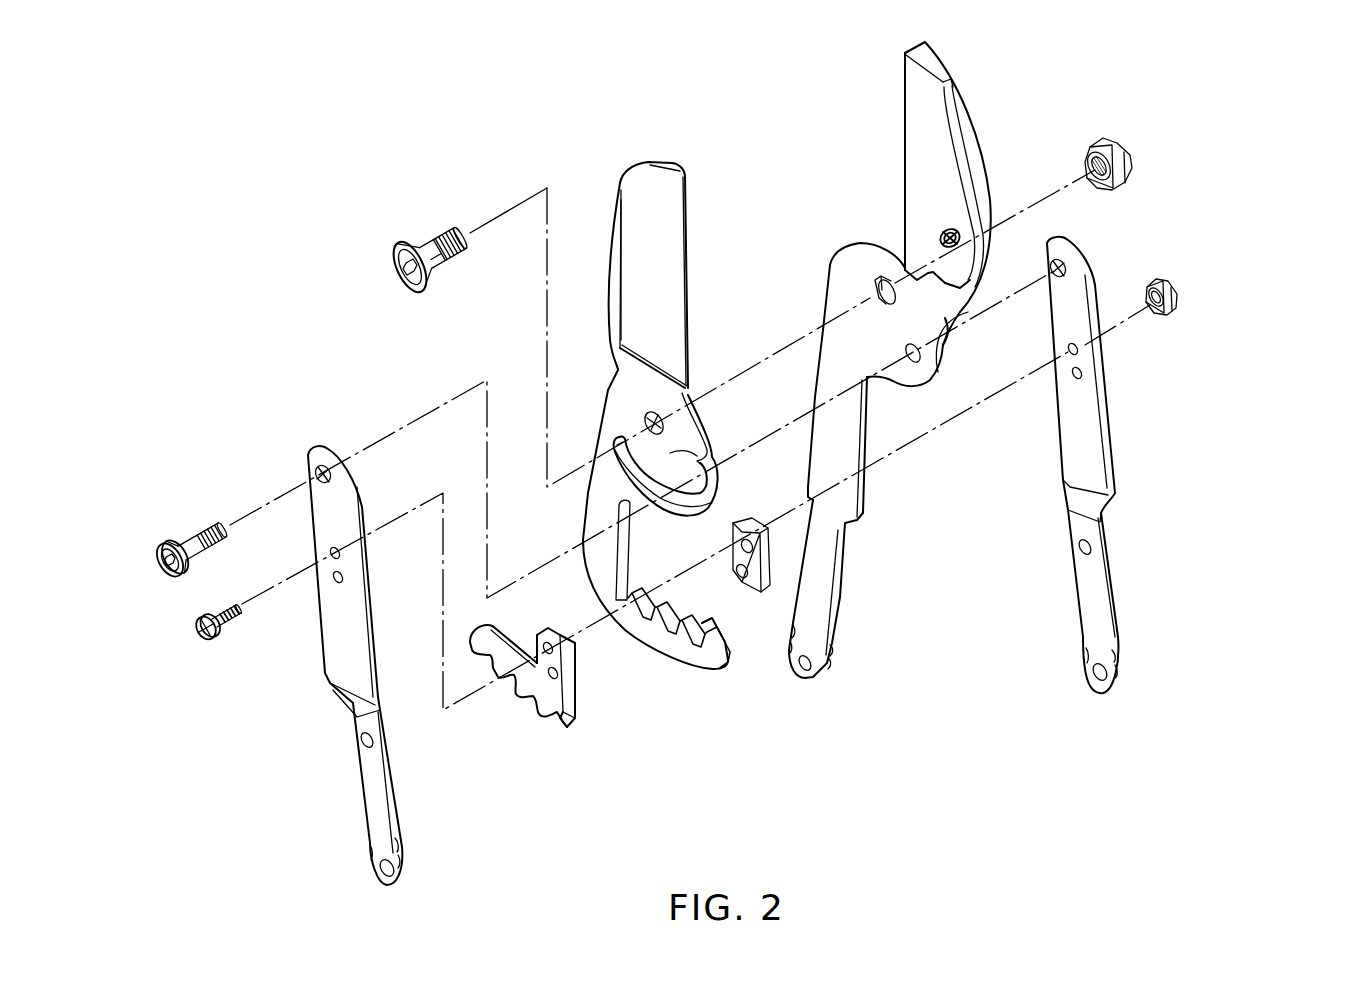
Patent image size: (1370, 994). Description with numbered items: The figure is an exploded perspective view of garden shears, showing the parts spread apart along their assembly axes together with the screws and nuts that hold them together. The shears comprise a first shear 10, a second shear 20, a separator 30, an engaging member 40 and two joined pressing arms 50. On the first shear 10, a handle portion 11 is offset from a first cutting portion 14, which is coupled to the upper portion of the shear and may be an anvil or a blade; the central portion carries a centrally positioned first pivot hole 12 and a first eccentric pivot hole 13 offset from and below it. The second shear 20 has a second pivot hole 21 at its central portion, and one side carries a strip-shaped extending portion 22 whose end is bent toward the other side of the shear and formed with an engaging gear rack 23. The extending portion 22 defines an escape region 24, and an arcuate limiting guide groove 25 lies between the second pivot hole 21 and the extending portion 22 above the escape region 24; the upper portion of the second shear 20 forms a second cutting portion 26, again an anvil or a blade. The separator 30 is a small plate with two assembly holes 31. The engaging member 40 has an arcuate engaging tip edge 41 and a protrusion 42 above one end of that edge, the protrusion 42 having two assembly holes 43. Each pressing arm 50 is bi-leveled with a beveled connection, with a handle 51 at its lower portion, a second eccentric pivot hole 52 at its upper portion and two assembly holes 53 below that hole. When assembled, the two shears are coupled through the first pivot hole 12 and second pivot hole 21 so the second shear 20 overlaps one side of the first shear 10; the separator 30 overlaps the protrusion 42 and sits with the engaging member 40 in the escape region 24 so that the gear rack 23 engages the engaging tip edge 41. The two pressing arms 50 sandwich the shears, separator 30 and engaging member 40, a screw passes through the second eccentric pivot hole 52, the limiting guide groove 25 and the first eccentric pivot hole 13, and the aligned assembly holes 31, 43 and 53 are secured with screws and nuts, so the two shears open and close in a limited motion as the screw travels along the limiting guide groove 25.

The first shear 10 is at (874, 488).
The handle portion 11 is at (840, 585).
The first pivot hole 12 is at (882, 280).
The first eccentric pivot hole 13 is at (950, 322).
The first cutting portion 14 is at (917, 143).
The second shear 20 is at (605, 182).
The second pivot hole 21 is at (650, 412).
The extending portion 22 is at (607, 520).
The engaging gear rack 23 is at (677, 645).
The escape region 24 is at (628, 554).
The limiting guide groove 25 is at (702, 465).
The second cutting portion 26 is at (655, 297).
The separator 30 is at (745, 592).
The assembly holes 31 is at (748, 540).
The engaging member 40 is at (540, 730).
The engaging tip edge 41 is at (505, 690).
The protrusion 42 is at (536, 633).
The assembly holes 43 is at (572, 703).
The pressing arms 50 is at (294, 680).
The handle 51 is at (373, 792).
The second eccentric pivot hole 52 is at (322, 474).
The assembly holes 53 is at (334, 551).